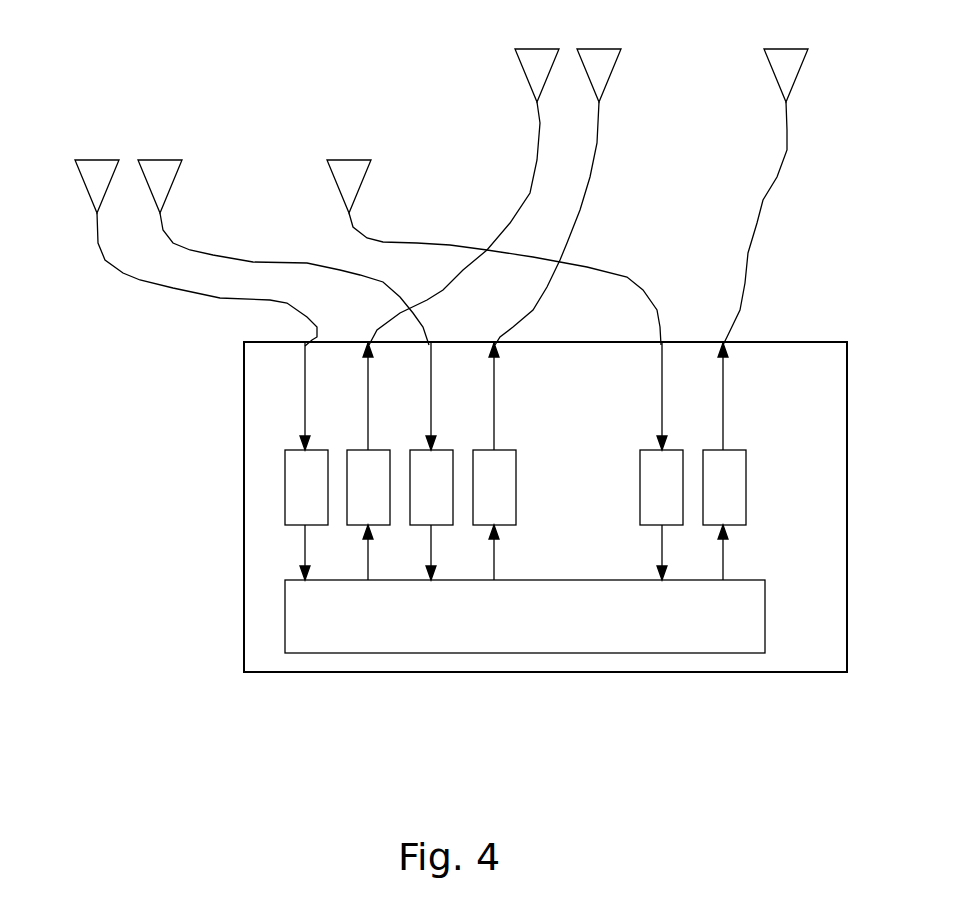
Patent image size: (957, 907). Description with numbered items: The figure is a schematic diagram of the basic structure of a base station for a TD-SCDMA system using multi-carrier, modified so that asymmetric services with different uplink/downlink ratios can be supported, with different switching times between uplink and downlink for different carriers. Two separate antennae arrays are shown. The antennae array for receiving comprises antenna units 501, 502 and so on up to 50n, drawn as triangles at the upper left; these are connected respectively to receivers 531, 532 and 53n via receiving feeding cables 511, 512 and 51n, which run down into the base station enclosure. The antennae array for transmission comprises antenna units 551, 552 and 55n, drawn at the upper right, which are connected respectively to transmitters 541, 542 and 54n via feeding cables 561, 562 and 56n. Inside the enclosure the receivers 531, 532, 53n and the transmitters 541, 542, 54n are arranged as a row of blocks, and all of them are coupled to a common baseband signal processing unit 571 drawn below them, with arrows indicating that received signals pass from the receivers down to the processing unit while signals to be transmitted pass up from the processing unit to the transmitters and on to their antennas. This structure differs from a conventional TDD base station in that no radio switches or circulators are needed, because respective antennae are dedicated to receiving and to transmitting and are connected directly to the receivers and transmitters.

The antenna unit 501 is at (97, 169).
The antenna unit 502 is at (160, 169).
The antenna unit 50n is at (349, 169).
The receiving feeding cable 511 is at (187, 279).
The receiving feeding cable 512 is at (280, 279).
The receiving feeding cable 51n is at (494, 279).
The antenna unit 551 is at (537, 60).
The antenna unit 552 is at (599, 60).
The antenna unit 55n is at (786, 60).
The feeding cable 561 is at (454, 223).
The feeding cable 562 is at (566, 223).
The feeding cable 56n is at (780, 223).
The receiver 531 is at (306, 461).
The transmitter 541 is at (368, 461).
The receiver 532 is at (431, 461).
The transmitter 542 is at (494, 461).
The receiver 53n is at (661, 461).
The transmitter 54n is at (724, 461).
The baseband signal processing unit 571 is at (525, 616).